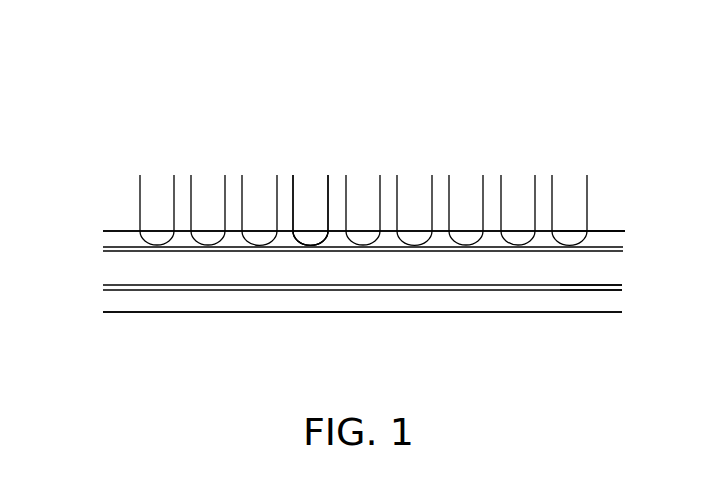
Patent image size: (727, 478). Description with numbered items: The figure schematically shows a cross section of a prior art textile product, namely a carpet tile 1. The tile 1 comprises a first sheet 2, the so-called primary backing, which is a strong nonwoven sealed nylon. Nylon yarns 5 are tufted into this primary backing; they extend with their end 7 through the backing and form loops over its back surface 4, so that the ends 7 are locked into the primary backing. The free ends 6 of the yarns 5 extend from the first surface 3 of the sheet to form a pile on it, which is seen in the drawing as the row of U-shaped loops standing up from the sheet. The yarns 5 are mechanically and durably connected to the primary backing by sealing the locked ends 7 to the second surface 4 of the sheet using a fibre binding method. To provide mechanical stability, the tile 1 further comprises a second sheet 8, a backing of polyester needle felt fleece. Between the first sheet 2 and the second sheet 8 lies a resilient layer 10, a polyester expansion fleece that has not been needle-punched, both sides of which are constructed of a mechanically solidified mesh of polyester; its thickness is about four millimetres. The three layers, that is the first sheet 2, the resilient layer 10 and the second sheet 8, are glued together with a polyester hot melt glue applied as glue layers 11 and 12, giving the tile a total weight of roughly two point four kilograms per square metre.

The tile 1 is at (158, 139).
The first sheet 2 is at (118, 239).
The first surface 3 is at (598, 222).
The back surface 4 is at (602, 256).
The nylon yarns 5 is at (314, 172).
The free ends 6 is at (294, 178).
The end 7 is at (293, 238).
The second sheet 8 is at (375, 304).
The resilient layer 10 is at (113, 268).
The glue layer 11 is at (612, 247).
The glue layer 12 is at (598, 285).